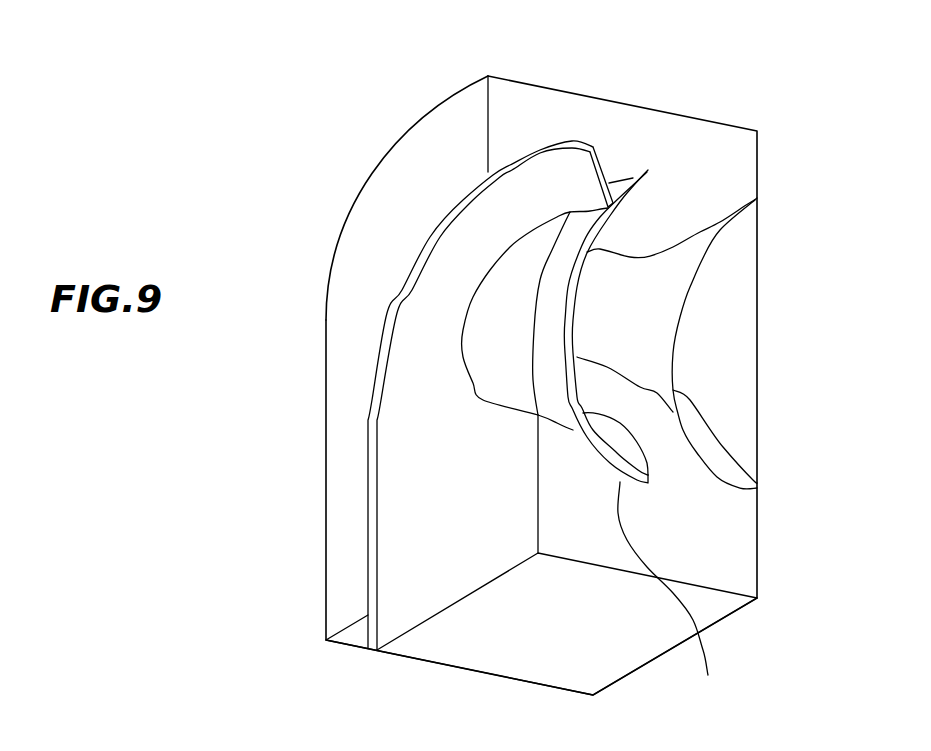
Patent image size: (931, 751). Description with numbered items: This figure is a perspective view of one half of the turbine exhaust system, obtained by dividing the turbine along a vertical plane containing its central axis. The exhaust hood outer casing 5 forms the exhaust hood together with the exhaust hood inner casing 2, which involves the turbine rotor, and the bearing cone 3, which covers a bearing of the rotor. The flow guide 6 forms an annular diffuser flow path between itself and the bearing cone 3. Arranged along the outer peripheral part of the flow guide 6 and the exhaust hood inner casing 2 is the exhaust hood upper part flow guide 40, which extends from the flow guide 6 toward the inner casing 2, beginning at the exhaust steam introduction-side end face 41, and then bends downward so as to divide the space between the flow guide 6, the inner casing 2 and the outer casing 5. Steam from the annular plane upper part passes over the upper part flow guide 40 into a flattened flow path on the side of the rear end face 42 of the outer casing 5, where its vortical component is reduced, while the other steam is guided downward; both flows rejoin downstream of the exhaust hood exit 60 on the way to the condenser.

The exhaust hood inner casing 2 is at (513, 267).
The bearing cone 3 is at (697, 235).
The exhaust hood outer casing 5 is at (472, 84).
The flow guide 6 is at (669, 596).
The exhaust hood upper part flow guide 40 is at (364, 451).
The exhaust steam introduction-side end face 41 is at (607, 160).
The rear end face 42 is at (367, 224).
The exhaust hood exit 60 is at (570, 641).